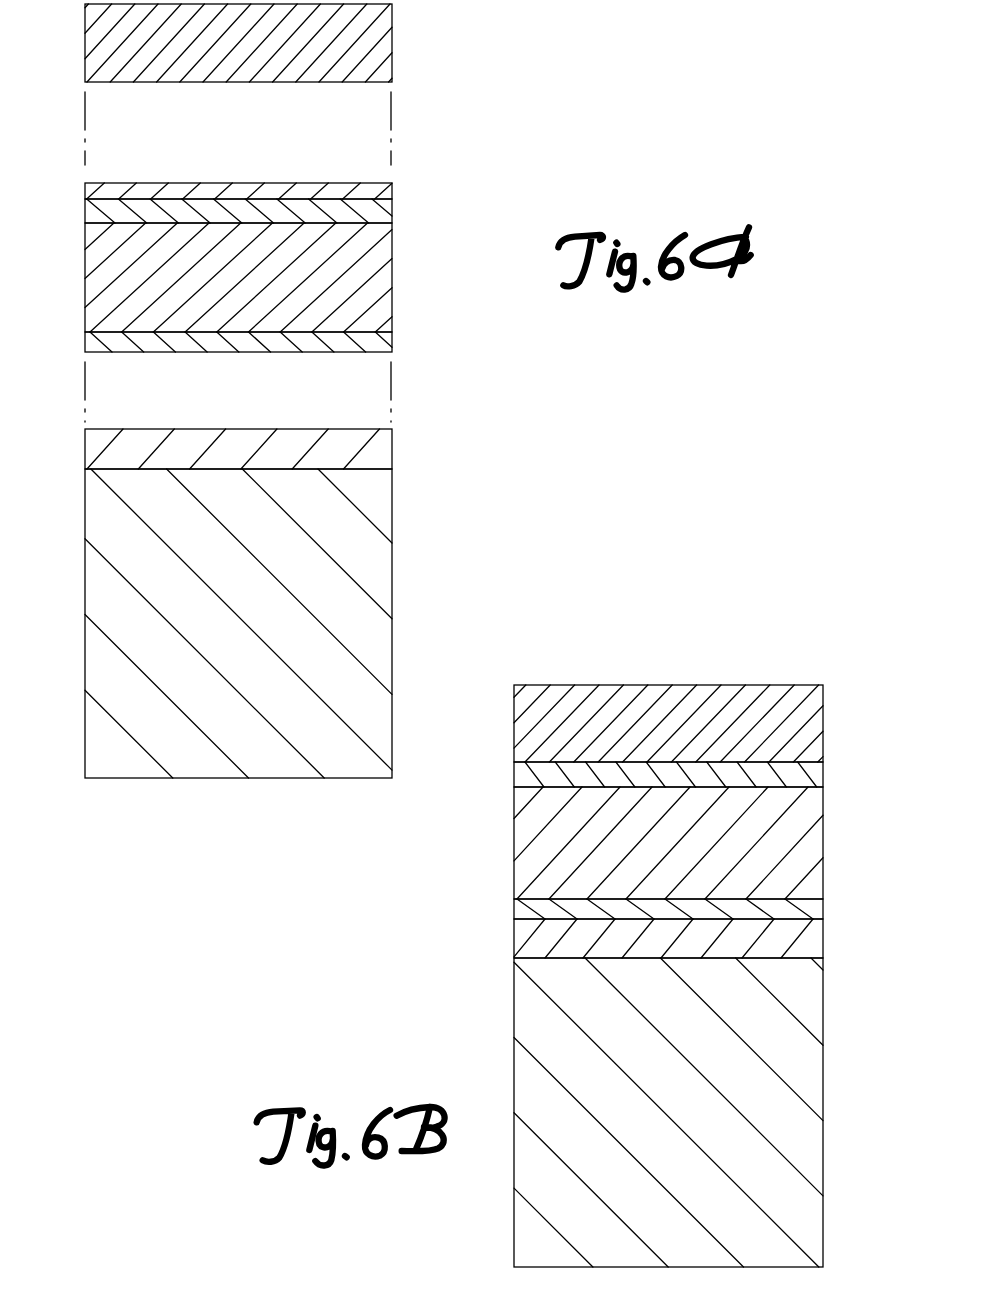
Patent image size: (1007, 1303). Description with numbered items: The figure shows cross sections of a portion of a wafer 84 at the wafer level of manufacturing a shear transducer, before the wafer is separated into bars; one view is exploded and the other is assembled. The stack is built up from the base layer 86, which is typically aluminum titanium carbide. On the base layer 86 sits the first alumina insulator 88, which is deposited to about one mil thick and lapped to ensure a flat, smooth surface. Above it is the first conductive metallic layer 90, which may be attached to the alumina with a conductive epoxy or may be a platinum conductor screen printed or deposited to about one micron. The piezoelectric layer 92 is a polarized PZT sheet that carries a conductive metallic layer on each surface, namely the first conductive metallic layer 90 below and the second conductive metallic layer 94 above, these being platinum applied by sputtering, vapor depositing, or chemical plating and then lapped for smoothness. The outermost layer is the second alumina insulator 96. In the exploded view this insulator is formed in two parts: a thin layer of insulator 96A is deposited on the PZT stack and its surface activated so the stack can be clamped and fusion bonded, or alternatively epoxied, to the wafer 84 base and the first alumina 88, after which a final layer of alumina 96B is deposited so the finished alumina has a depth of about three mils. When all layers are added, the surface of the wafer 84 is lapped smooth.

In FIG. 6A, the wafer 84 is at (510, 243).
In FIG. 6B, the wafer 84 is at (487, 896).
In FIG. 6A, the base layer 86 is at (392, 505).
In FIG. 6B, the base layer 86 is at (823, 1054).
In FIG. 6A, the first alumina insulator 88 is at (392, 448).
In FIG. 6B, the first alumina insulator 88 is at (823, 940).
In FIG. 6A, the first conductive metallic layer 90 is at (392, 343).
In FIG. 6B, the first conductive metallic layer 90 is at (823, 905).
In FIG. 6A, the piezoelectric layer 92 is at (392, 265).
In FIG. 6B, the piezoelectric layer 92 is at (823, 835).
In FIG. 6A, the second conductive metallic layer 94 is at (392, 205).
In FIG. 6B, the second conductive metallic layer 94 is at (823, 775).
In FIG. 6A, the second alumina insulator 96 is at (258, 101).
In FIG. 6B, the second alumina insulator 96 is at (823, 686).
In FIG. 6A, the thin layer of insulator 96A is at (392, 183).
In FIG. 6A, the final layer of alumina 96B is at (392, 30).